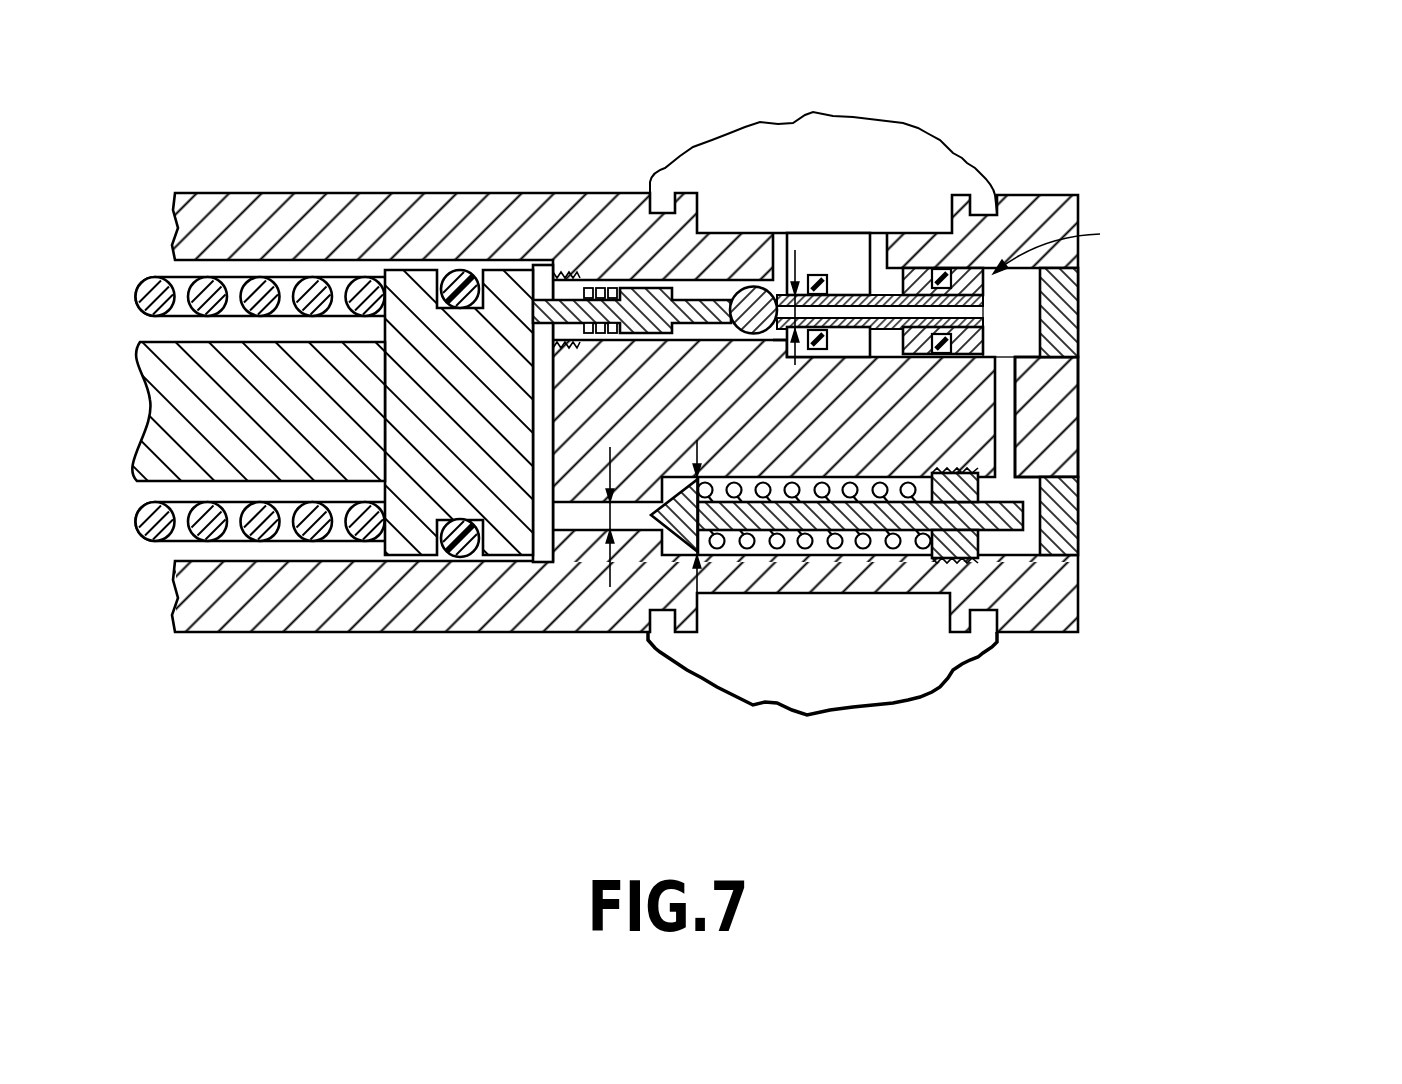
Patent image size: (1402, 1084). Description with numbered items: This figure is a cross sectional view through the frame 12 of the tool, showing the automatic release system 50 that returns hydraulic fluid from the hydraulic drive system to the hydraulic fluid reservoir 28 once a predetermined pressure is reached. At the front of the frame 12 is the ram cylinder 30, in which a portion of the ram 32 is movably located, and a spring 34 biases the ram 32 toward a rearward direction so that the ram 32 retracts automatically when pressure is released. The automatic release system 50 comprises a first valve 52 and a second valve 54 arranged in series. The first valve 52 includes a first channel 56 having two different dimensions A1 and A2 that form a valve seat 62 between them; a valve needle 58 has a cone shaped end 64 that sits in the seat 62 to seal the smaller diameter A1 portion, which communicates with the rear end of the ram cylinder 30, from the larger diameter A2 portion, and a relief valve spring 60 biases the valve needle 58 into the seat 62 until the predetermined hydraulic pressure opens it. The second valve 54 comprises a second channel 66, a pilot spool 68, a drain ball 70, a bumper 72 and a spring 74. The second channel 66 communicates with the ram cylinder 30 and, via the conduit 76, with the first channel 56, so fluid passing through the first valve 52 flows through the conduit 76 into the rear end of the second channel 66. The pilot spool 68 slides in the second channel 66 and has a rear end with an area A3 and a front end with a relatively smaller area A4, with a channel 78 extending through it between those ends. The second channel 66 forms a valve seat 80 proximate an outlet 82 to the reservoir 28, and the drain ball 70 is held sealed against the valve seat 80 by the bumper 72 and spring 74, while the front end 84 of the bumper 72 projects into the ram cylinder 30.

The frame 12 is at (300, 193).
The hydraulic fluid reservoir 28 is at (813, 687).
The ram cylinder 30 is at (233, 268).
The ram 32 is at (147, 388).
The spring 34 is at (141, 282).
The automatic release system 50 is at (719, 425).
The first valve 52 is at (950, 530).
The second valve 54 is at (1030, 352).
The first channel 56 is at (537, 552).
The valve needle 58 is at (1023, 520).
The relief valve spring 60 is at (878, 557).
The valve seat 62 is at (650, 528).
The cone shaped end 64 is at (662, 545).
The second channel 66 is at (1023, 300).
The pilot spool 68 is at (950, 237).
The drain ball 70 is at (737, 283).
The bumper 72 is at (655, 285).
The spring 74 is at (597, 287).
The conduit 76 is at (1007, 417).
The channel 78 is at (862, 292).
The valve seat 80 is at (768, 332).
The outlet 82 is at (780, 243).
The front end 84 is at (492, 268).
The smaller diameter dimension A1 is at (558, 561).
The larger diameter dimension A2 is at (713, 553).
The rear end area A3 is at (1067, 247).
The front end area A4 is at (770, 280).